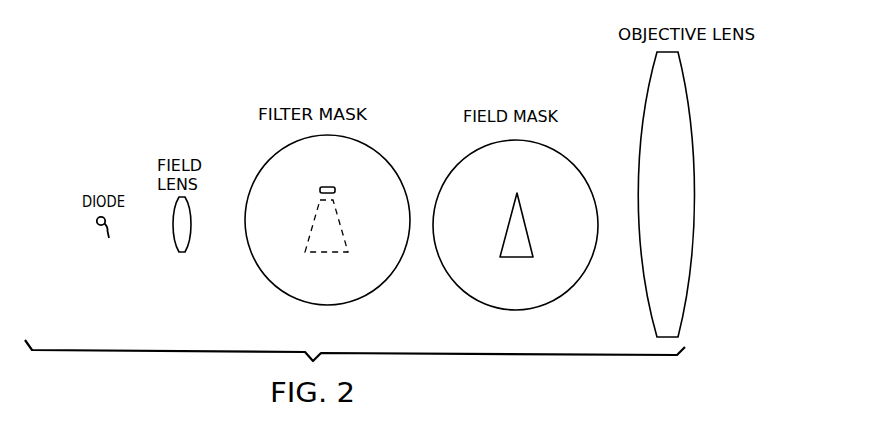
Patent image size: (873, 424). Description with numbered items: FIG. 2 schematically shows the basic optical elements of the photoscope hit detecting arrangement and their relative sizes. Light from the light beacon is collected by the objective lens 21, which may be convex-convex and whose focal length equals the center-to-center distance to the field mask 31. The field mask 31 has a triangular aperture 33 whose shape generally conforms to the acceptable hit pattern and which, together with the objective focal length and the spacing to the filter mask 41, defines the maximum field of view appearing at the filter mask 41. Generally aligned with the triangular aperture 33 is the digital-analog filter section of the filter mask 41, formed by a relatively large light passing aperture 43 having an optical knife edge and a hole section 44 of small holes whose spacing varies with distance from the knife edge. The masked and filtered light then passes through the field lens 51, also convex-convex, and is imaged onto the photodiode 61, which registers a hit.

The objective lens 21 is at (680, 295).
The field mask 31 is at (571, 274).
The triangular aperture 33 is at (513, 222).
The filter mask 41 is at (388, 272).
The light passing aperture 43 is at (321, 187).
The hole section 44 is at (342, 222).
The field lens 51 is at (189, 240).
The photodiode 61 is at (107, 238).